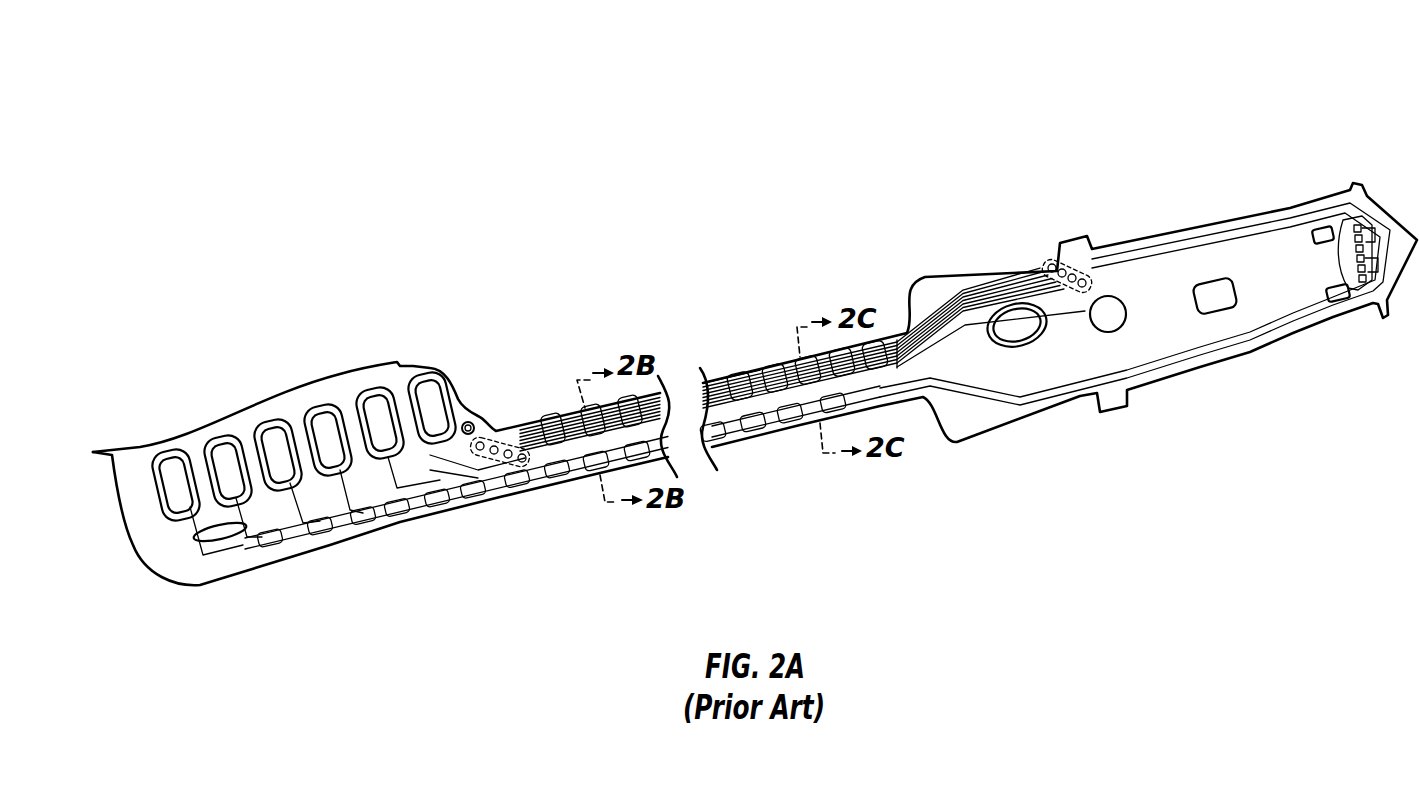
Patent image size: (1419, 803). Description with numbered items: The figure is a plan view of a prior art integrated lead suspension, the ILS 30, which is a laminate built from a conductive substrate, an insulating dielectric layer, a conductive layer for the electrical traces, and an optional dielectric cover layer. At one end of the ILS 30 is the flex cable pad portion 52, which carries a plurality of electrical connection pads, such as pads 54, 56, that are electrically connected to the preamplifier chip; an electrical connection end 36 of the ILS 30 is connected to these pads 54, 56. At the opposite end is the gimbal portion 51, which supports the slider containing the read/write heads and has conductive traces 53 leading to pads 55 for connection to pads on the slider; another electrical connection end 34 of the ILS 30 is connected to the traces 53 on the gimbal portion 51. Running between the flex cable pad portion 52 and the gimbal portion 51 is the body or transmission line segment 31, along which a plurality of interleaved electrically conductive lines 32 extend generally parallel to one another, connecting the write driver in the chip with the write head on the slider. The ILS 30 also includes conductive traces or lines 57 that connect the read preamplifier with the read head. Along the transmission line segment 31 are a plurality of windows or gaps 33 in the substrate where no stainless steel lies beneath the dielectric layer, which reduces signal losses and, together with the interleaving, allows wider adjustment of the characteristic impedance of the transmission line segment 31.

The ILS 30 is at (370, 96).
The transmission line segment 31 is at (1087, 230).
The interleaved electrically conductive traces or lines 32 is at (745, 385).
The windows or gaps 33 is at (807, 393).
The electrical connection end 34 is at (1036, 259).
The electrical connection end 36 is at (491, 426).
The gimbal portion 51 is at (1233, 262).
The flex cable pad portion 52 is at (378, 490).
The conductive traces 53 is at (1298, 220).
The electrical connection pad 54 is at (433, 402).
The pads 55 is at (1339, 253).
The electrical connection pad 56 is at (373, 407).
The conductive traces or lines 57 is at (232, 540).